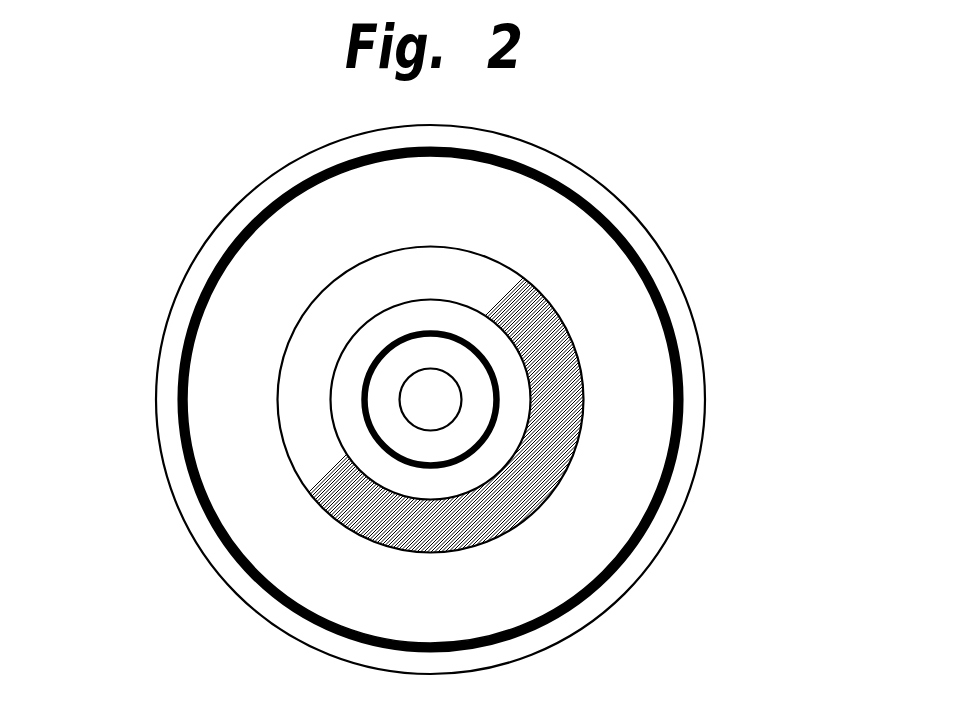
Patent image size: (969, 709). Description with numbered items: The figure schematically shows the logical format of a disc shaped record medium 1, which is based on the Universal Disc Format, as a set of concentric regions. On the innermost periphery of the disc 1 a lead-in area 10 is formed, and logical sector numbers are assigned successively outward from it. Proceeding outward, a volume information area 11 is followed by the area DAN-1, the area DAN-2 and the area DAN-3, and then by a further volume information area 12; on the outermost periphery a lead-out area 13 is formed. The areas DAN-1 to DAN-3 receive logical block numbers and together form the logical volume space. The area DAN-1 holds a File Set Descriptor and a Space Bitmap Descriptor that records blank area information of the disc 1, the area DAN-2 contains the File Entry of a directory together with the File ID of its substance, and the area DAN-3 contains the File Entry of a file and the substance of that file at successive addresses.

The disc shaped record medium 1 is at (774, 158).
The lead-in area 10 is at (385, 399).
The volume information area 11 is at (407, 337).
The volume information area 12 is at (570, 190).
The lead-out area 13 is at (640, 242).
The area DAN-1 (Data Area Number 1) DAN-1 is at (370, 455).
The area DAN-2 is at (552, 465).
The area DAN-3 is at (652, 383).